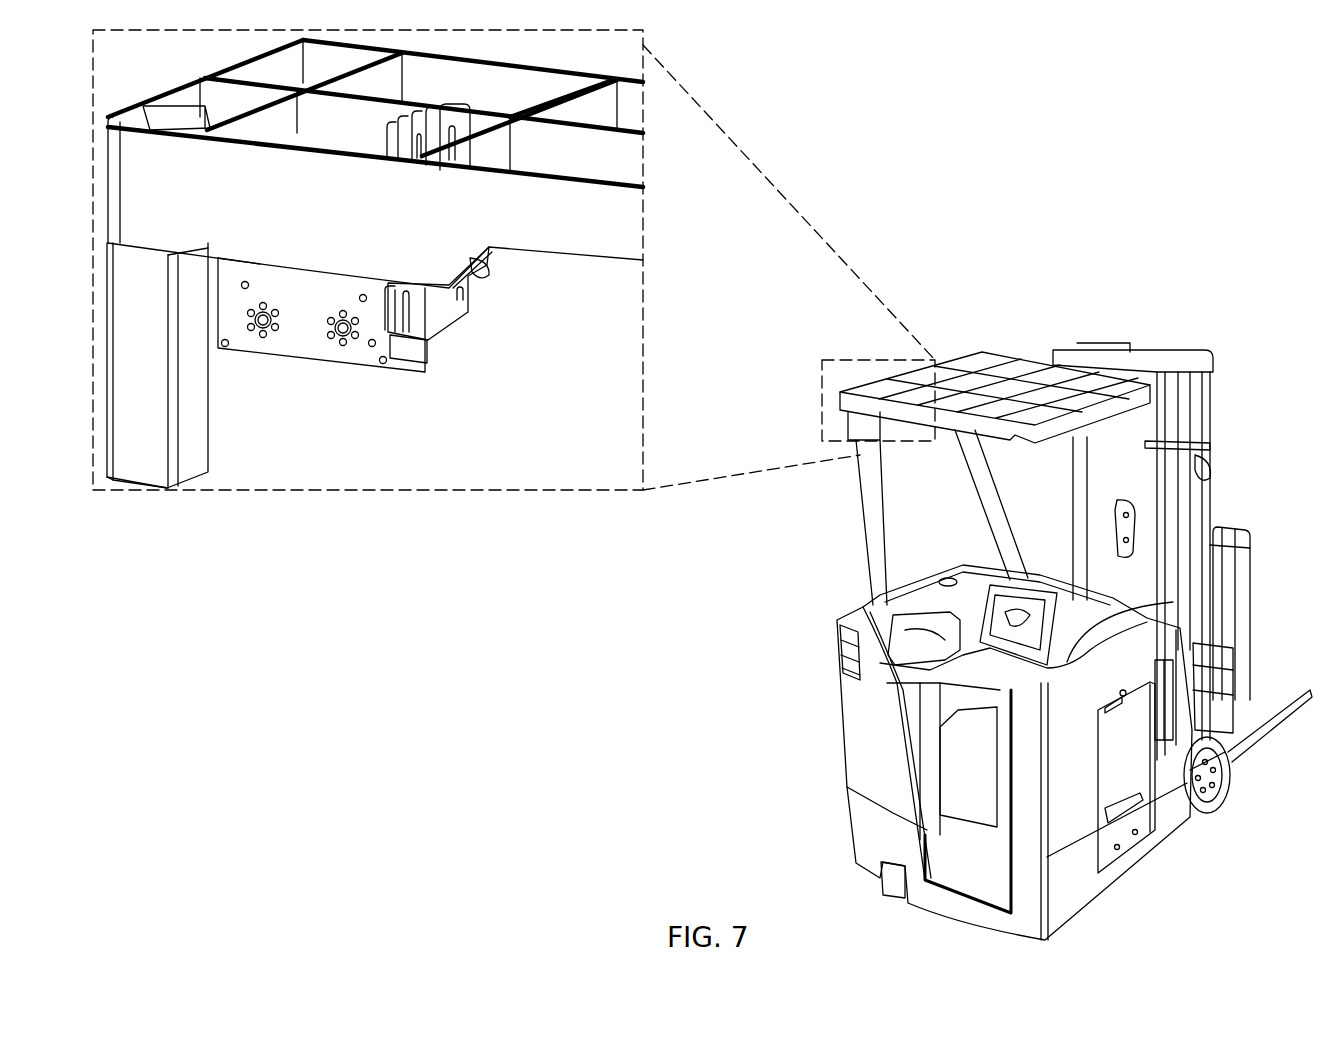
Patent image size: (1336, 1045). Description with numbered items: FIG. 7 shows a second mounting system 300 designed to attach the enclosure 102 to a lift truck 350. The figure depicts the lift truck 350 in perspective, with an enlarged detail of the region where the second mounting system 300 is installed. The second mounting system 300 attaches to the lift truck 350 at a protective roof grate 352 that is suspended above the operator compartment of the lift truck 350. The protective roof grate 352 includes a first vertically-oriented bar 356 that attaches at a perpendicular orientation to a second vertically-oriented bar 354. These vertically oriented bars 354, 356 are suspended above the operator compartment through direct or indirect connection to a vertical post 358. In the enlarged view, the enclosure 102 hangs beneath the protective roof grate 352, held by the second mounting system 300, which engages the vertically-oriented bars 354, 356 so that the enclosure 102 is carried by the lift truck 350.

The enclosure 102 is at (363, 357).
The second mounting system 300 is at (457, 312).
The lift truck 350 is at (1029, 599).
The protective roof grate 352 is at (1035, 355).
The second vertically-oriented bar 354 is at (538, 246).
The first vertically-oriented bar 356 is at (480, 120).
The vertical post 358 is at (197, 427).